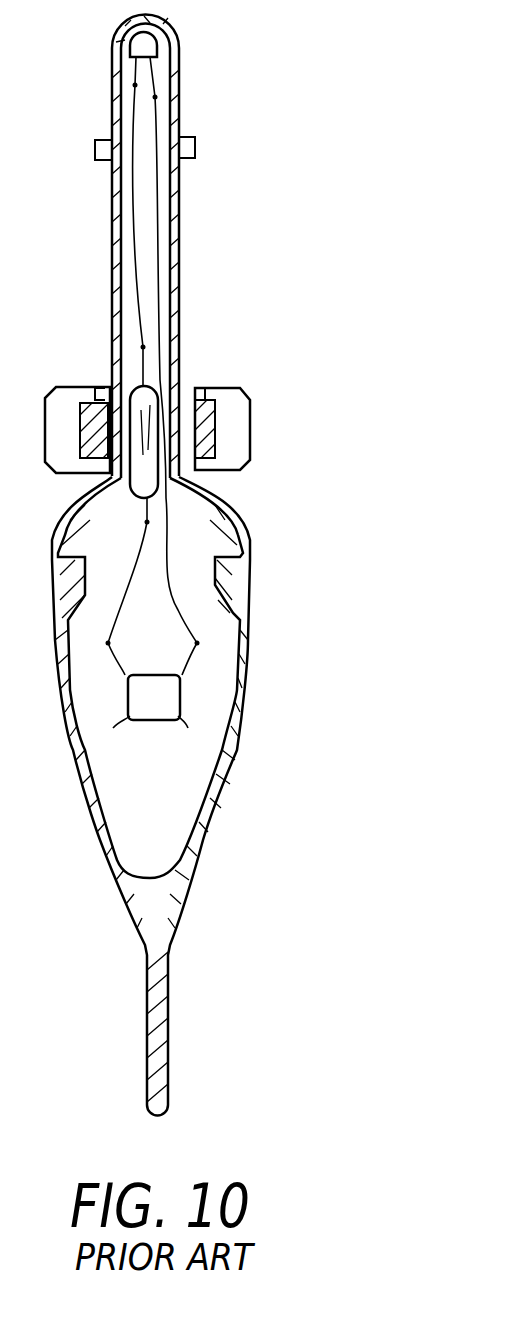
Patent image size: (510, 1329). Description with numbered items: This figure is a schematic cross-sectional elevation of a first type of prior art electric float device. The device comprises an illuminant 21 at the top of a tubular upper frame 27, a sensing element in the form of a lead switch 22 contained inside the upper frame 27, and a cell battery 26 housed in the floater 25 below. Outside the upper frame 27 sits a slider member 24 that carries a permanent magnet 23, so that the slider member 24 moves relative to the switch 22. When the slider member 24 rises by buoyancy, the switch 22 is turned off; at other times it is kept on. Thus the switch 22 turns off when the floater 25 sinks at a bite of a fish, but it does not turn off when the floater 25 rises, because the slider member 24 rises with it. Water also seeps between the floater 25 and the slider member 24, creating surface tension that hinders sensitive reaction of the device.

The illuminant 21 is at (142, 48).
The switch 22 is at (150, 448).
The permanent magnet 23 is at (203, 390).
The slider member 24 is at (232, 460).
The floater 25 is at (250, 572).
The cell battery 26 is at (170, 702).
The upper frame 27 is at (180, 255).